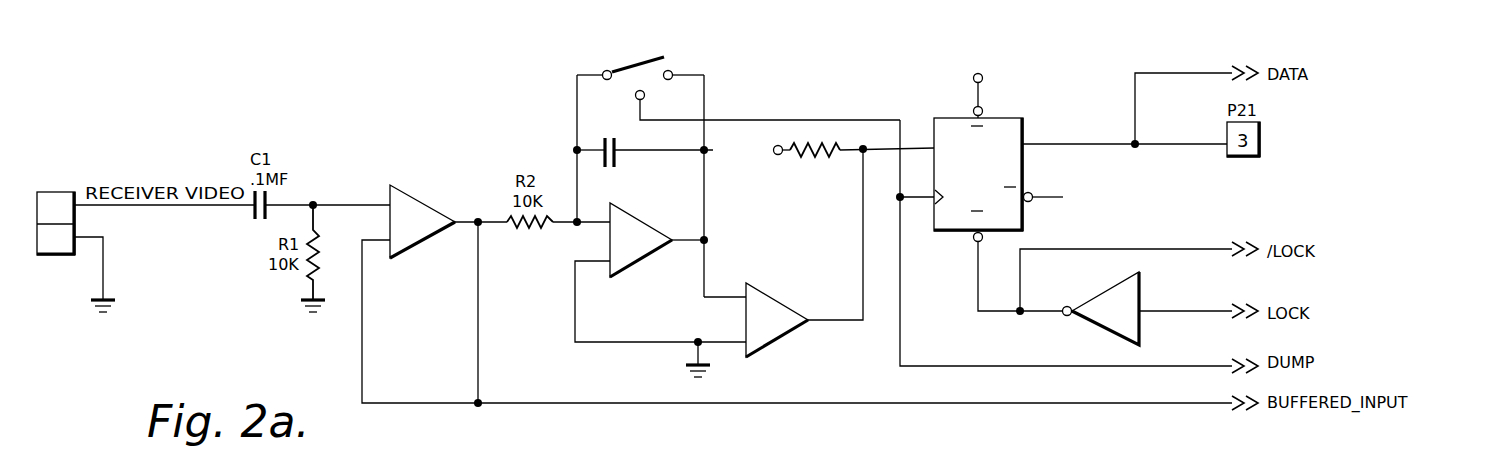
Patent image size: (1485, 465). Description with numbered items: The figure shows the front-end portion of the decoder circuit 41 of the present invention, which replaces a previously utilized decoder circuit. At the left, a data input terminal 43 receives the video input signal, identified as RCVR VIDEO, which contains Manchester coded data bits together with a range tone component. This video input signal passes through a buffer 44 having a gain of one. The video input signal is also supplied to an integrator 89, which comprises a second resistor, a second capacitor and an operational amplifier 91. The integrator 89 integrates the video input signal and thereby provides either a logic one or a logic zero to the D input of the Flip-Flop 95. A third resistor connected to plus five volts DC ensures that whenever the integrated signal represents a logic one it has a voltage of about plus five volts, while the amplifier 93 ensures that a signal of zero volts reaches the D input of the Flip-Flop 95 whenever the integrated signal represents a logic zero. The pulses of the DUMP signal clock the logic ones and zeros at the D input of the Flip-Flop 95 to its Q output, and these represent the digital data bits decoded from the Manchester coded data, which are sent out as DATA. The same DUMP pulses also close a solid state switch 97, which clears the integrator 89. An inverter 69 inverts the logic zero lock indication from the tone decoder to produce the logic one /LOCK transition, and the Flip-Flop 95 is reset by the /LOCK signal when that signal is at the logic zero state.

The data input terminal 43 is at (41, 200).
The decoder circuit 41 is at (446, 110).
The buffer 44 is at (414, 196).
The integrator 89 is at (732, 90).
The solid state switch 97 is at (641, 62).
The operational amplifier 91 is at (632, 263).
The amplifier 93 is at (772, 294).
The Flip-Flop 95 is at (1025, 175).
The inverter 69 is at (1142, 289).